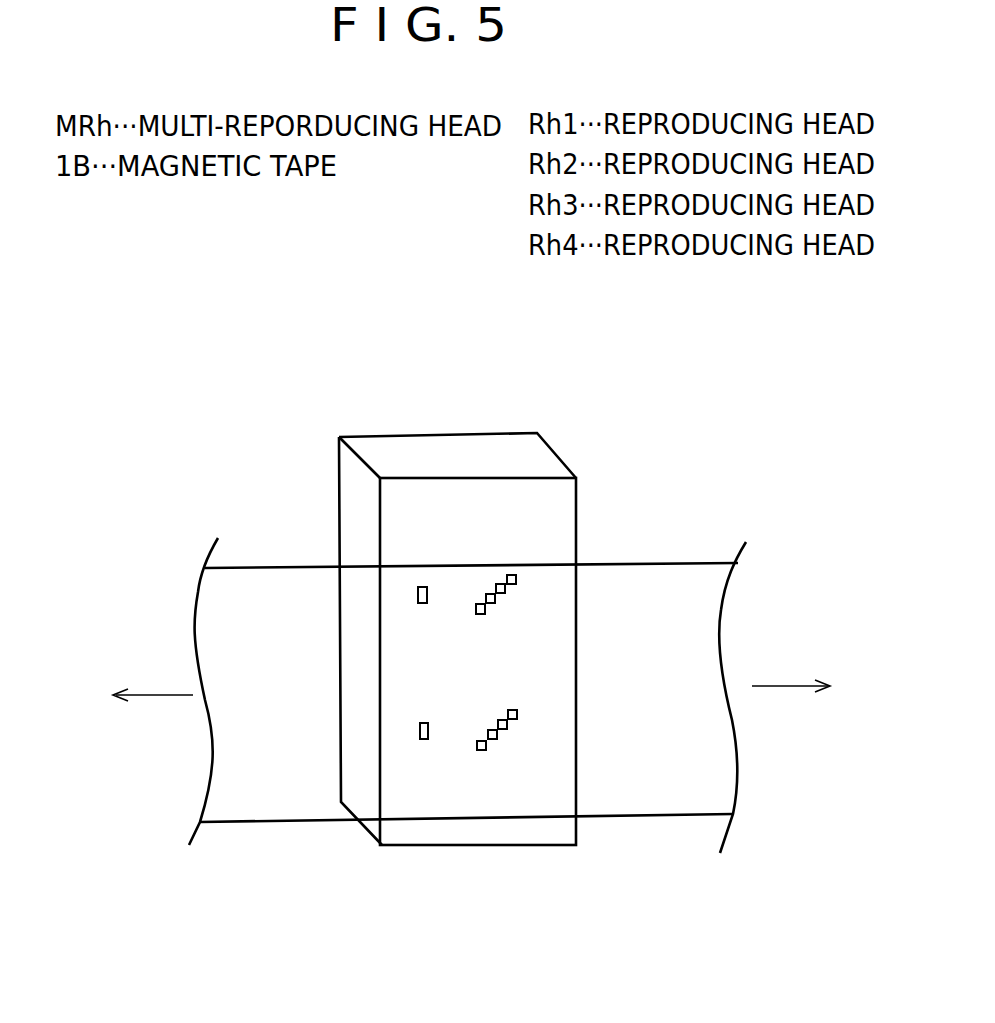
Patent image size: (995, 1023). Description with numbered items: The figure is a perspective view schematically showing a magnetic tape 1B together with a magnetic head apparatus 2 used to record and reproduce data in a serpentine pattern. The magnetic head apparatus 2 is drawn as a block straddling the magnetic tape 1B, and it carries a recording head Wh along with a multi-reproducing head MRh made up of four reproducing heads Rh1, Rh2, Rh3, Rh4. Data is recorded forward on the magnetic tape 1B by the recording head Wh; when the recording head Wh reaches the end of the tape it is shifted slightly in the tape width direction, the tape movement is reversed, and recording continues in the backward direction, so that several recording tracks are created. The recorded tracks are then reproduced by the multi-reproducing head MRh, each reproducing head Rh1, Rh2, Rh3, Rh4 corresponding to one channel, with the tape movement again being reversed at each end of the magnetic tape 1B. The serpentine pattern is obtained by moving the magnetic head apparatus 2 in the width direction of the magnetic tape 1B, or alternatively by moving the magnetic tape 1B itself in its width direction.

The multi-reproducing head MRh is at (728, 375).
The magnetic tape 1B is at (695, 563).
The magnetic head apparatus 2 is at (391, 447).
The recording head Wh is at (422, 587).
The reproducing head Rh1 is at (512, 575).
The reproducing head Rh2 is at (500, 584).
The reproducing head Rh3 is at (489, 594).
The reproducing head Rh4 is at (479, 604).